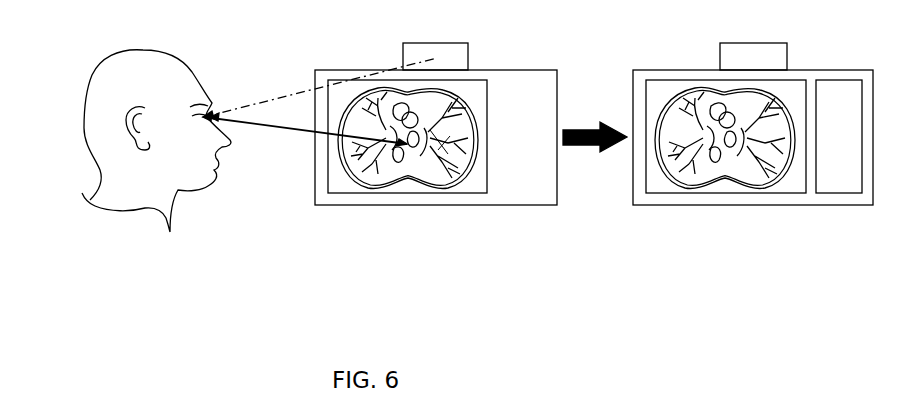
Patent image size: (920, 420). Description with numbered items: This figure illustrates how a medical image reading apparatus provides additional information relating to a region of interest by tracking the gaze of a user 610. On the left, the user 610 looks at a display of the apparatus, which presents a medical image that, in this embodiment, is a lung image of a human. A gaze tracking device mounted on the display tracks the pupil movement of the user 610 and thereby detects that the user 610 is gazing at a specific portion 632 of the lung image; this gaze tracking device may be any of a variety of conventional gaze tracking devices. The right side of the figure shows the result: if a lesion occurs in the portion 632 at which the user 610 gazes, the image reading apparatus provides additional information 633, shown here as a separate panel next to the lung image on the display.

The user 610 is at (103, 60).
The specific portion 632 is at (447, 173).
The additional information 633 is at (837, 194).